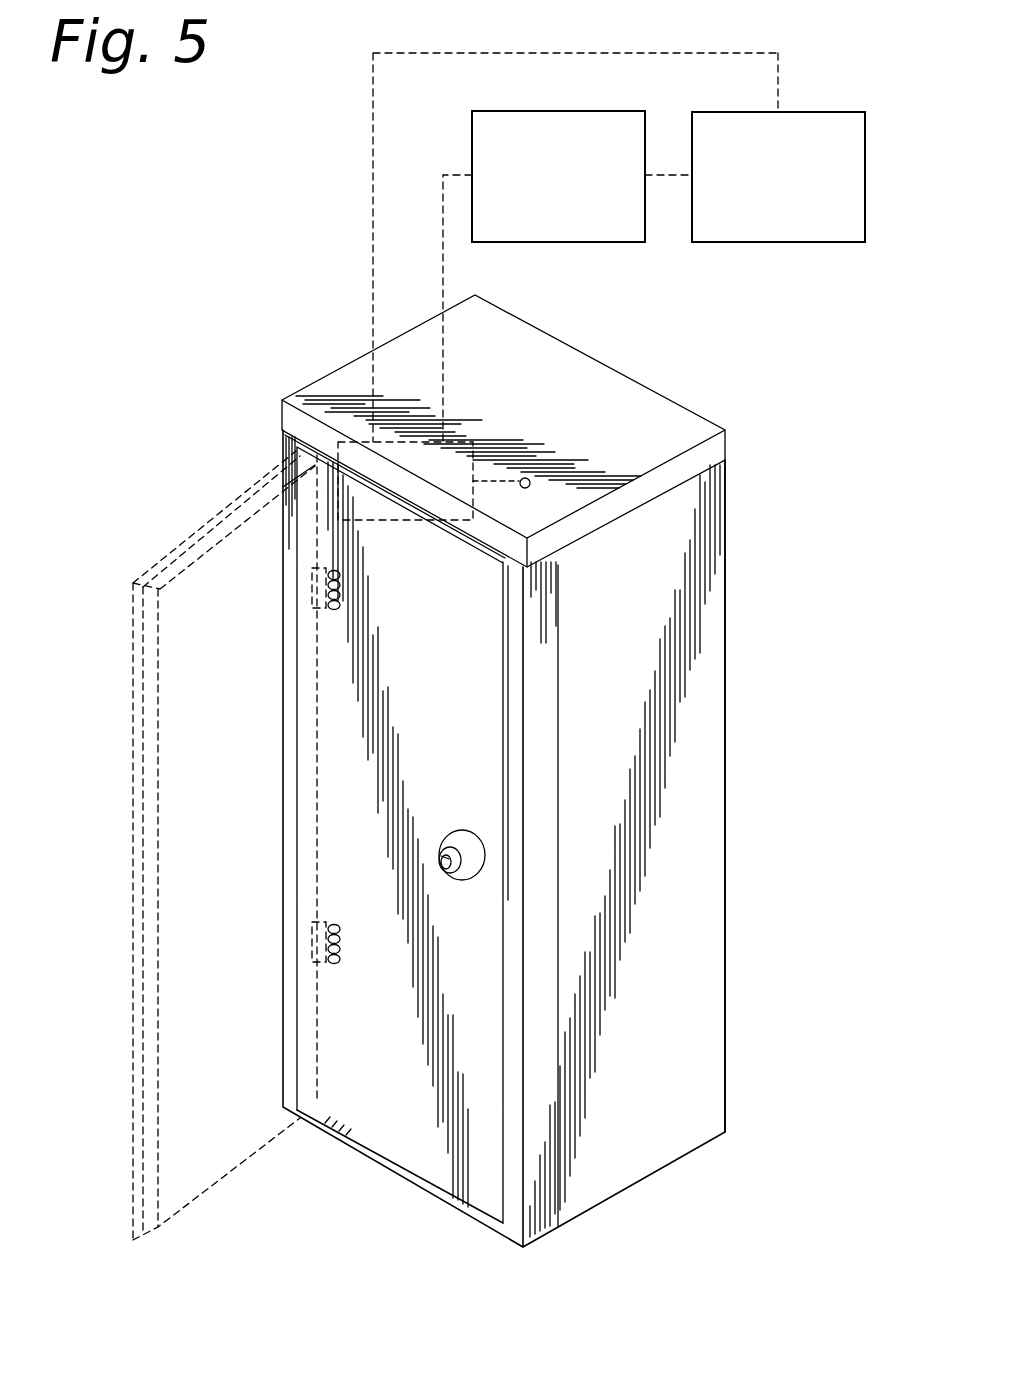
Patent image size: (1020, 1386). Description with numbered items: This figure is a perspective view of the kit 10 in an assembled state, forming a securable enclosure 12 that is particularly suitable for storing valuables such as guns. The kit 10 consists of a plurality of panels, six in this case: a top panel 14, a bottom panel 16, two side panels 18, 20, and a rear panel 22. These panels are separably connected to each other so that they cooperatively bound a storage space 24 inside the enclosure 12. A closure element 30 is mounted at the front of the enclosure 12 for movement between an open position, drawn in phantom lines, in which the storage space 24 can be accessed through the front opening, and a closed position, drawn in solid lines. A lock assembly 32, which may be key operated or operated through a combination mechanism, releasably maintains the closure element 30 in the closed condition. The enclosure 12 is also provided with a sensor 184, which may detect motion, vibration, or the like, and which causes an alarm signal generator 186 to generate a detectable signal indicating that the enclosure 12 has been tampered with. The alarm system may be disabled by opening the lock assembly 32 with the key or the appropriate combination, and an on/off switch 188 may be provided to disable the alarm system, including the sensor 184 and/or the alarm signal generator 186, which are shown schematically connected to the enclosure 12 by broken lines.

The kit 10 is at (770, 812).
The securable enclosure 12 is at (703, 1176).
The top panel 14 is at (550, 394).
The bottom panel 16 is at (407, 1181).
The side panel 18 is at (282, 447).
The side panel 20 is at (697, 936).
The rear panel 22 is at (727, 530).
The storage space 24 is at (668, 767).
The closure element 30 is at (472, 749).
The lock assembly 32 is at (483, 843).
The sensor 184 is at (386, 515).
The alarm signal generator 186 is at (541, 232).
The on/off switch 188 is at (761, 232).